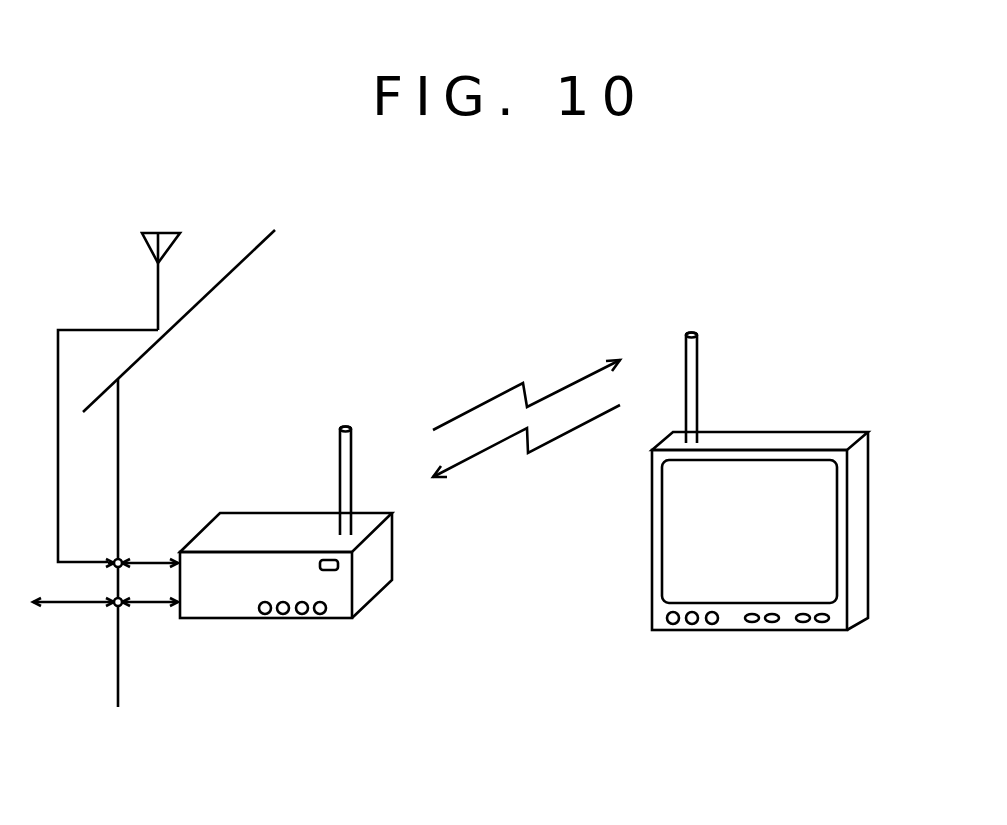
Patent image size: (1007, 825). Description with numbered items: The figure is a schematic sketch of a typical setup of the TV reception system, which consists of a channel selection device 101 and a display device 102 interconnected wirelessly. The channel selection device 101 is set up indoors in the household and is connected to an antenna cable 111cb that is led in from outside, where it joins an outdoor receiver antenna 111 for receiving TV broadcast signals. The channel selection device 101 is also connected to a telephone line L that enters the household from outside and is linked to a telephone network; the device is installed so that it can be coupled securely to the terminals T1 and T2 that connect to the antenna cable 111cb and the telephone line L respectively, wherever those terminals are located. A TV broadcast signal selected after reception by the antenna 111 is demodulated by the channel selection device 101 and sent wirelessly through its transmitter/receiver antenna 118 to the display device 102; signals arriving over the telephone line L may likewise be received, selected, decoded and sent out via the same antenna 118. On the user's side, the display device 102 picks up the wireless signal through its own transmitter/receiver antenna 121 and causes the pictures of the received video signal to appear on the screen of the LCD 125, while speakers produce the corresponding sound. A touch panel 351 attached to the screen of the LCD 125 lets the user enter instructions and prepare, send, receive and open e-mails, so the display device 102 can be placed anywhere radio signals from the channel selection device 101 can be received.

The outdoor receiver antenna 111 is at (157, 292).
The antenna cable 111cb is at (58, 455).
The terminal T1 is at (122, 558).
The terminal T2 is at (122, 608).
The telephone line L is at (72, 603).
The channel selection device 101 is at (286, 606).
The transmitter/receiver antenna 118 is at (348, 427).
The display device 102 is at (760, 473).
The transmitter/receiver antenna 121 is at (689, 333).
The LCD 125 is at (757, 462).
The touch panel 351 is at (732, 593).